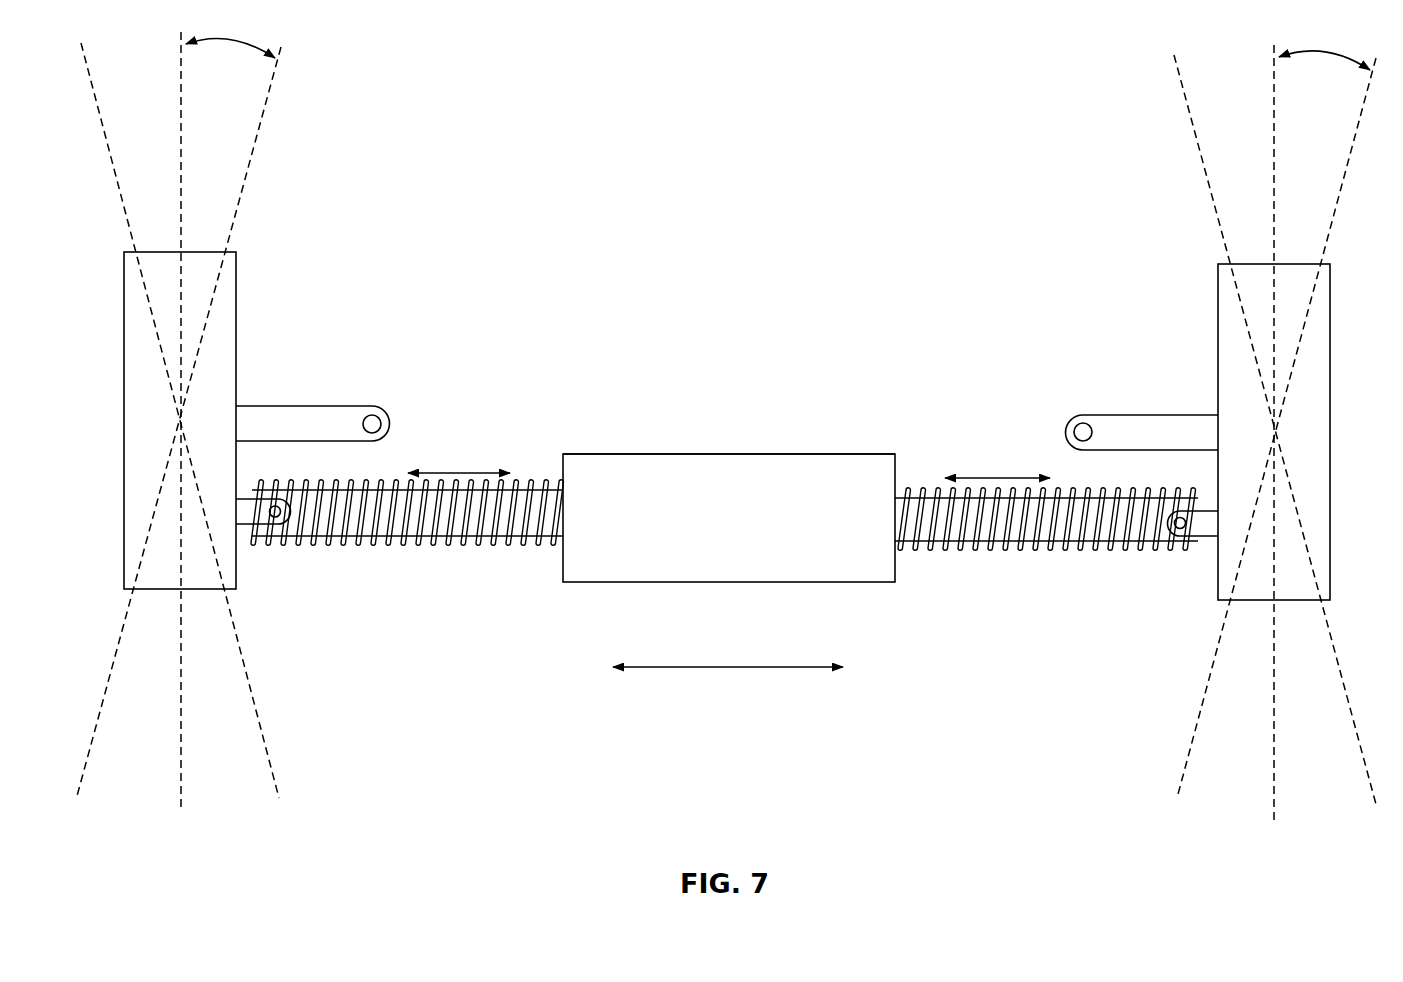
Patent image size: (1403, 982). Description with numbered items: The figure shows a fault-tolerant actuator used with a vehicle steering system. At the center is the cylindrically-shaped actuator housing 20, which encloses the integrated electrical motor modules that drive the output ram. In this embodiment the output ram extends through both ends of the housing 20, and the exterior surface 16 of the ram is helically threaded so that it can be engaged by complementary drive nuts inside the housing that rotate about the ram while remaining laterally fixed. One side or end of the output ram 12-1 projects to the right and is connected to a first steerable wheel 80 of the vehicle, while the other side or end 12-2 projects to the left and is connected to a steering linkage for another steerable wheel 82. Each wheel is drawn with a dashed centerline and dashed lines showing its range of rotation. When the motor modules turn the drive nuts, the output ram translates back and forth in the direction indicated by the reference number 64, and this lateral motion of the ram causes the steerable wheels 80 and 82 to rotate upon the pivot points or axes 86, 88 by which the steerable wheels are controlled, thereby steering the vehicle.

The output ram end 12-1 is at (990, 537).
The output ram end 12-2 is at (423, 527).
The exterior surface 16 is at (665, 570).
The housing 20 is at (730, 454).
The direction of translation 64 is at (722, 667).
The first steerable wheel 80 is at (1313, 357).
The steerable wheel 82 is at (218, 345).
The pivot point 86 is at (381, 424).
The pivot point 88 is at (1132, 415).